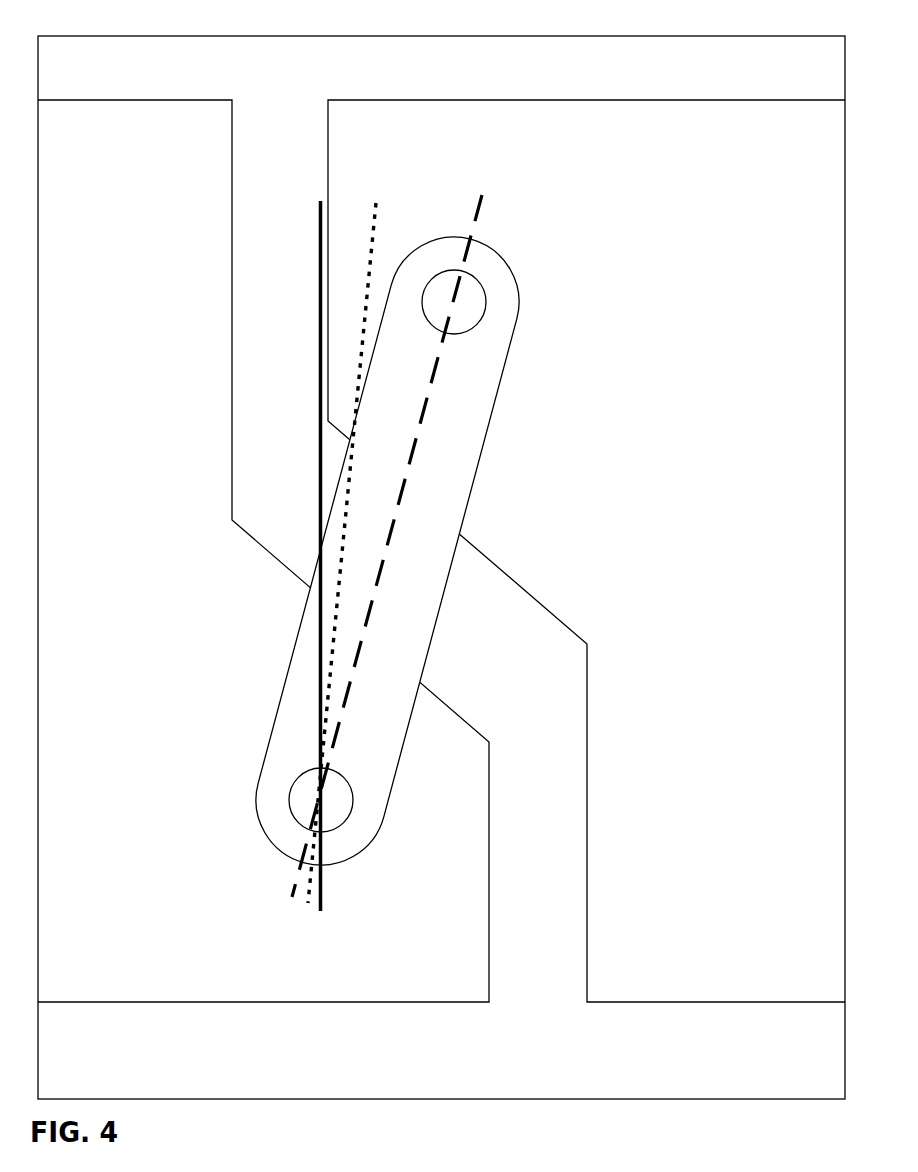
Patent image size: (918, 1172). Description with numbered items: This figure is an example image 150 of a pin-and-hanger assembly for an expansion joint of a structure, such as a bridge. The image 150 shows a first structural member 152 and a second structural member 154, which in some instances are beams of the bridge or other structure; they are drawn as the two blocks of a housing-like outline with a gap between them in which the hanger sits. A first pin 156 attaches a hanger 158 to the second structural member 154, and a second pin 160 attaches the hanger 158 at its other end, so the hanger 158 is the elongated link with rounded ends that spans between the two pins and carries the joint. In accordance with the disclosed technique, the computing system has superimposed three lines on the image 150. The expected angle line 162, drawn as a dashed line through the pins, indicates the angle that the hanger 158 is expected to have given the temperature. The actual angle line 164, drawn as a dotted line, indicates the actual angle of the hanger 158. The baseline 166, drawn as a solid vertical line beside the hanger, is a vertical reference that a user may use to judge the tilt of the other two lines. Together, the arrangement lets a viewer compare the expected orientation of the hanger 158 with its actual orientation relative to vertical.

The image 150 is at (782, 36).
The first structural member 152 is at (165, 100).
The second structural member 154 is at (782, 100).
The first pin 156 is at (480, 280).
The hanger 158 is at (493, 408).
The second pin 160 is at (297, 781).
The expected angle line 162 is at (400, 500).
The actual angle line 164 is at (373, 237).
The baseline 166 is at (319, 256).